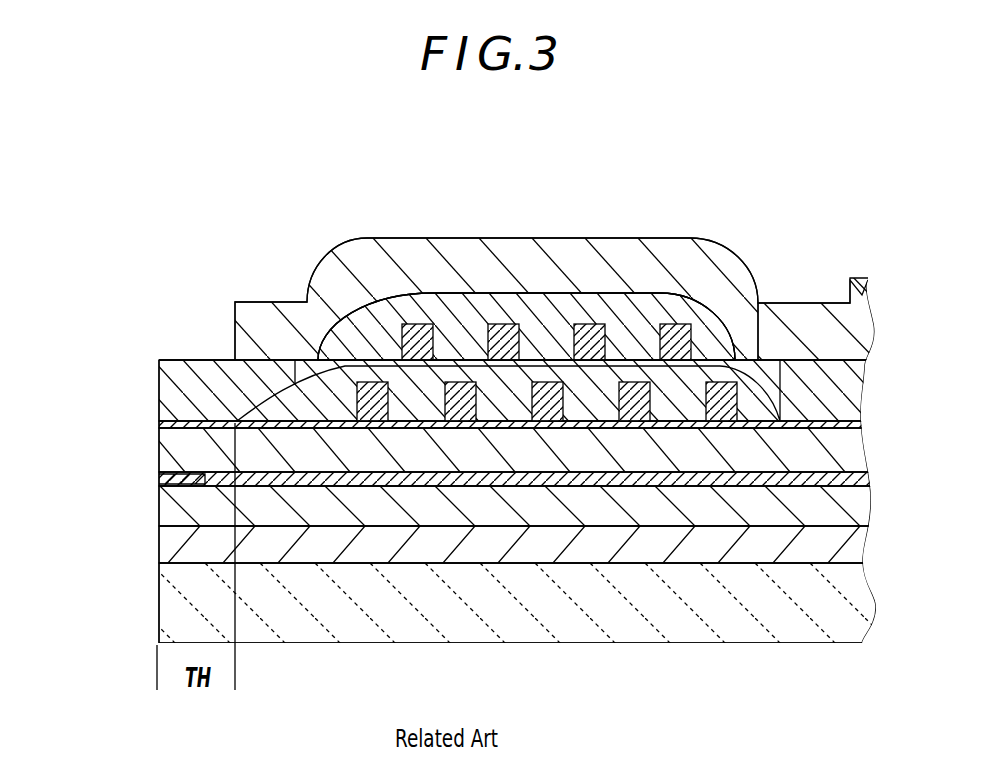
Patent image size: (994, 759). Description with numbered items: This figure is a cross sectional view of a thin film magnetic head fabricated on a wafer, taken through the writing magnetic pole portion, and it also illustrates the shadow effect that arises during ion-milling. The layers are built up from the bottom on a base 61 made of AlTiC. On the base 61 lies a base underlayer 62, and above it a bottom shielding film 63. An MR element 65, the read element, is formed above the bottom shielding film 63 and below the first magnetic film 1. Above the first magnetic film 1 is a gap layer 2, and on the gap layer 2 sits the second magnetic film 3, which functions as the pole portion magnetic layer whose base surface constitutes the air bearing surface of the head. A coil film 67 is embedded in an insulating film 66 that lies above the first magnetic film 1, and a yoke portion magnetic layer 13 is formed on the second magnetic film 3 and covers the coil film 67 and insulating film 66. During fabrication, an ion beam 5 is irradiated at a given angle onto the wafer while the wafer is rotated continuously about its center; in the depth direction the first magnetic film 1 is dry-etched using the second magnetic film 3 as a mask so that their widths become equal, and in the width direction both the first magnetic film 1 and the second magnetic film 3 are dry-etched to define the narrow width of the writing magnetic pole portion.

The first magnetic film 1 is at (158, 440).
The gap layer 2 is at (207, 423).
The second magnetic film 3 is at (223, 387).
The ion beam 5 is at (266, 275).
The yoke portion magnetic layer 13 is at (456, 252).
The base 61 is at (172, 608).
The base underlayer 62 is at (172, 545).
The bottom shielding film 63 is at (172, 508).
The MR element 65 is at (172, 477).
The insulating film 66 is at (688, 390).
The coil film 67 is at (552, 395).